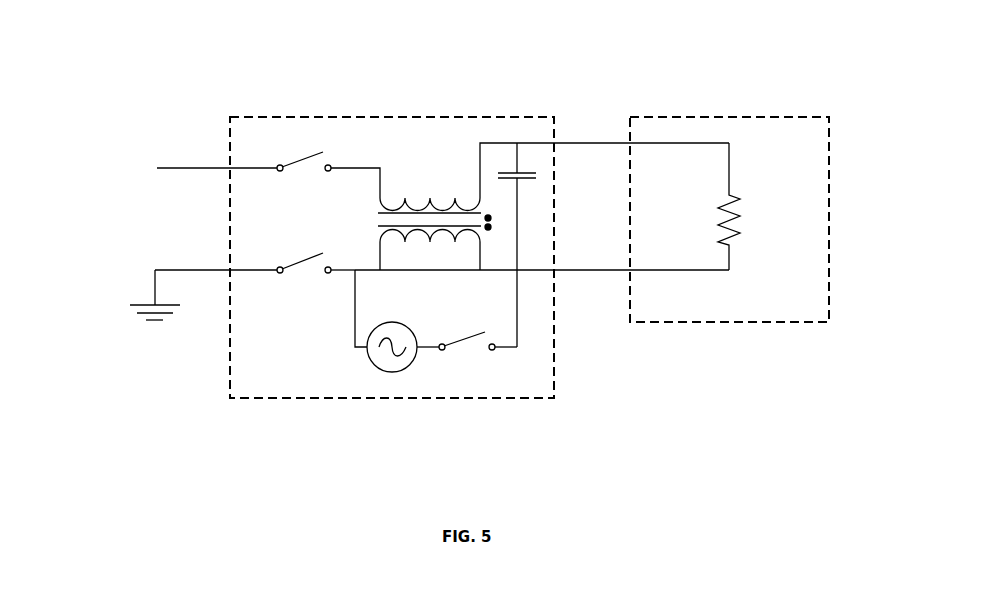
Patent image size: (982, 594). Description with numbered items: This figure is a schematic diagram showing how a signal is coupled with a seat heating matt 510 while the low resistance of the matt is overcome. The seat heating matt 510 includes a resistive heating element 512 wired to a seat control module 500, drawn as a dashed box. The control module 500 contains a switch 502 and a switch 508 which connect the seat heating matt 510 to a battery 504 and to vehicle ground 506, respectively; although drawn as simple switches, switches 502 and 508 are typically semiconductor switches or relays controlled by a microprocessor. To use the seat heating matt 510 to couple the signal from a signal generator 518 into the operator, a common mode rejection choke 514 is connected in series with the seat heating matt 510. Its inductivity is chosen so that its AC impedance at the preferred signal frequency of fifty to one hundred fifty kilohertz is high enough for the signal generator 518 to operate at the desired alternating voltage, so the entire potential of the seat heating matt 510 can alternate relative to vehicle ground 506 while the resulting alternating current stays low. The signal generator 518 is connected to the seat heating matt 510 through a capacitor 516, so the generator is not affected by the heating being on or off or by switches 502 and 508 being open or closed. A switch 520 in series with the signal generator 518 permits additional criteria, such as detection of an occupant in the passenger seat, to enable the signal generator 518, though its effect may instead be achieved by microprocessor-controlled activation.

The seat control module 500 is at (313, 117).
The switch 502 is at (307, 157).
The battery 504 is at (120, 157).
The vehicle ground 506 is at (145, 307).
The switch 508 is at (307, 261).
The seat heating matt 510 is at (728, 117).
The resistive heating element 512 is at (740, 220).
The common mode rejection choke 514 is at (430, 207).
The capacitor 516 is at (506, 172).
The signal generator 518 is at (392, 372).
The switch 520 is at (468, 338).